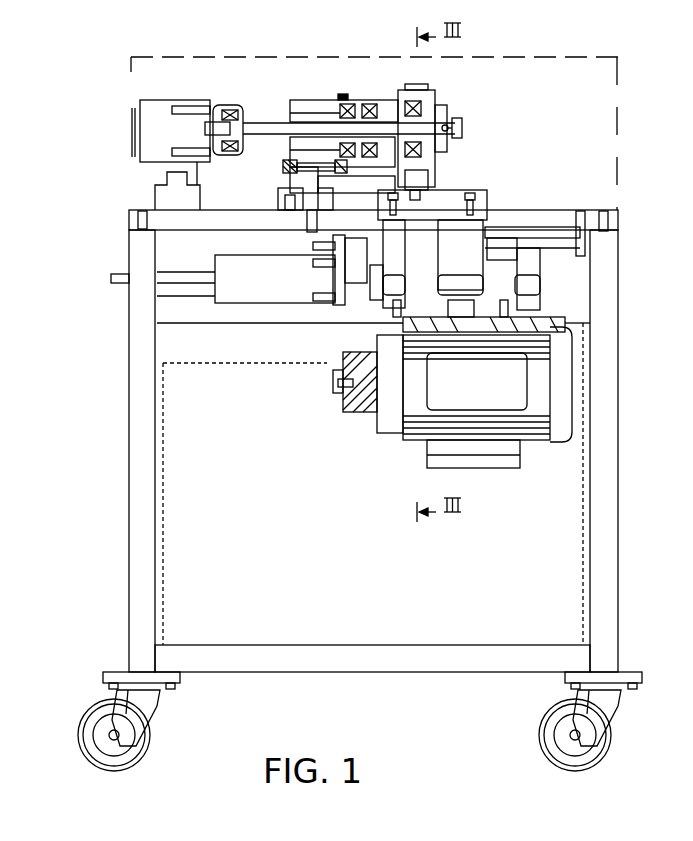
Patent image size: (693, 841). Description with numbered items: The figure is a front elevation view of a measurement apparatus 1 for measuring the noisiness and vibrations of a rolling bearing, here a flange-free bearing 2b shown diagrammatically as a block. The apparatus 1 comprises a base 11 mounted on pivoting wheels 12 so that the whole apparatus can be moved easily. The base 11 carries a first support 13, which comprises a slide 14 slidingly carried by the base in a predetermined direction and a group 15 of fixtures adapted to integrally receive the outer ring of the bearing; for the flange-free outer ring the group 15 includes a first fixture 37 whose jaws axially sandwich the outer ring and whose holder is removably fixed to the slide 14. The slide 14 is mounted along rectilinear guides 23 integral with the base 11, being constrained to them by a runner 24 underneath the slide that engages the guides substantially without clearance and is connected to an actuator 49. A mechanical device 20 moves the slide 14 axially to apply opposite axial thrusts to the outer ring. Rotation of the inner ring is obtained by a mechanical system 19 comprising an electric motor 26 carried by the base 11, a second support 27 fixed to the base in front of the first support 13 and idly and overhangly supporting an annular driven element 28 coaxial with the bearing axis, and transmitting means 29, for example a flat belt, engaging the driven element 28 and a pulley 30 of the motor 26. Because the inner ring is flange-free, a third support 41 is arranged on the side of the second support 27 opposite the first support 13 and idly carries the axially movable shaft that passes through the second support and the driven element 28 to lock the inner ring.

The measurement apparatus 1 is at (630, 76).
The bearing 2b is at (441, 110).
The base 11 is at (124, 438).
The pivoting wheels 12 is at (137, 748).
The first support 13 is at (458, 171).
The slide 14 is at (487, 205).
The group of fixtures 15 is at (441, 88).
The mechanical rotation system 19 is at (363, 436).
The mechanical device 20 is at (278, 296).
The rectilinear guides 23 is at (556, 245).
The runner 24 is at (420, 245).
The electric motor 26 is at (518, 407).
The second support 27 is at (286, 155).
The annular driven element 28 is at (362, 90).
The motion transmitting means 29 is at (266, 206).
The pulley 30 is at (362, 412).
The first fixture 37 is at (470, 120).
The third support 41 is at (186, 166).
The actuator 49 is at (230, 300).